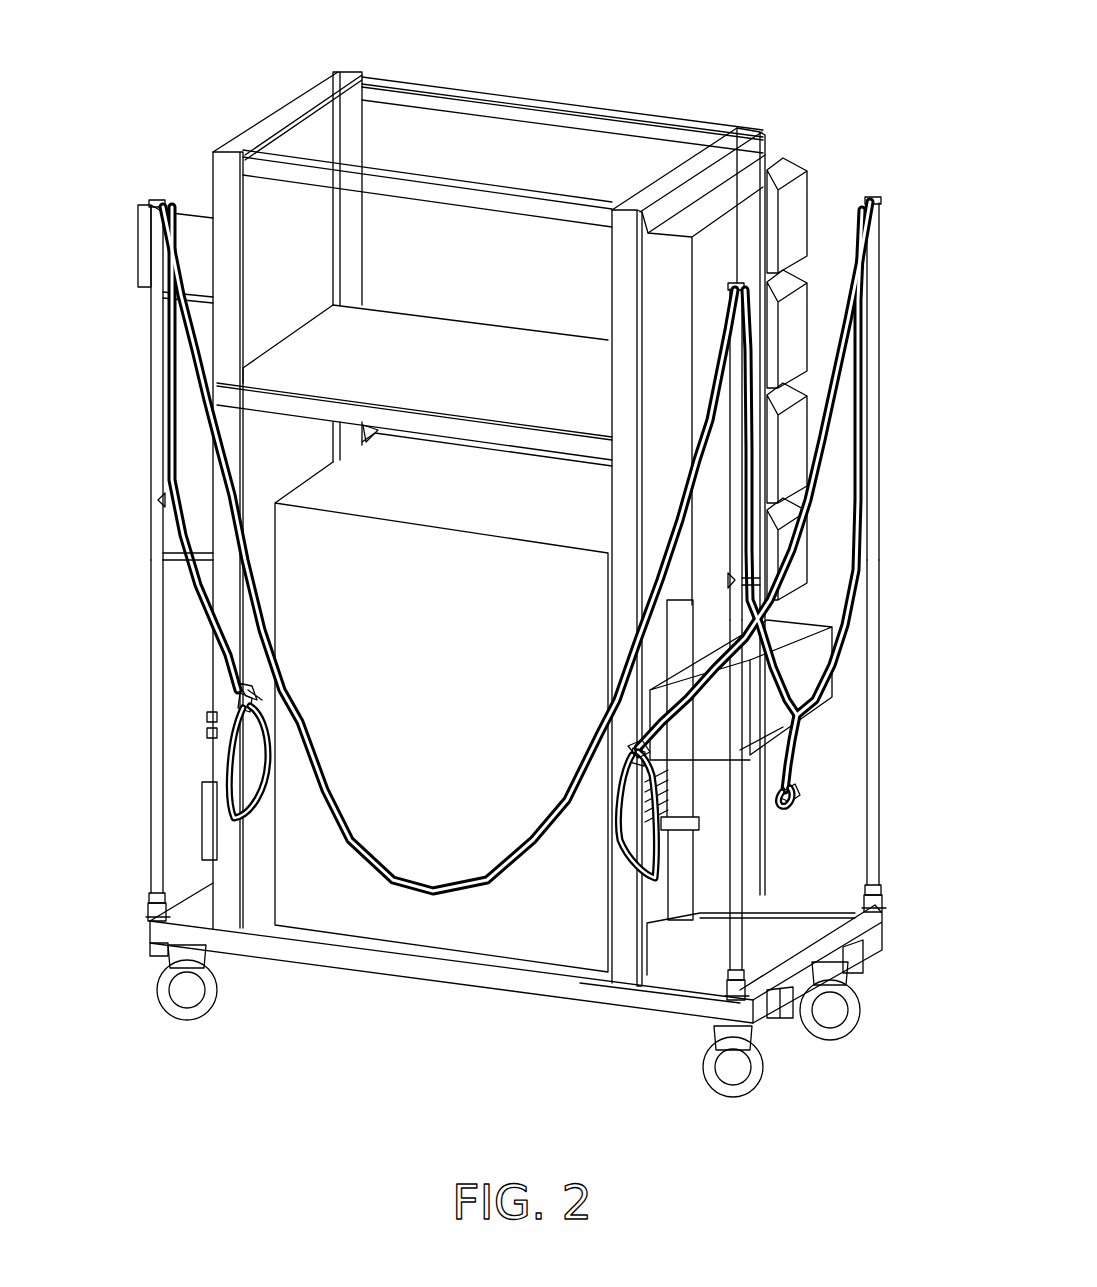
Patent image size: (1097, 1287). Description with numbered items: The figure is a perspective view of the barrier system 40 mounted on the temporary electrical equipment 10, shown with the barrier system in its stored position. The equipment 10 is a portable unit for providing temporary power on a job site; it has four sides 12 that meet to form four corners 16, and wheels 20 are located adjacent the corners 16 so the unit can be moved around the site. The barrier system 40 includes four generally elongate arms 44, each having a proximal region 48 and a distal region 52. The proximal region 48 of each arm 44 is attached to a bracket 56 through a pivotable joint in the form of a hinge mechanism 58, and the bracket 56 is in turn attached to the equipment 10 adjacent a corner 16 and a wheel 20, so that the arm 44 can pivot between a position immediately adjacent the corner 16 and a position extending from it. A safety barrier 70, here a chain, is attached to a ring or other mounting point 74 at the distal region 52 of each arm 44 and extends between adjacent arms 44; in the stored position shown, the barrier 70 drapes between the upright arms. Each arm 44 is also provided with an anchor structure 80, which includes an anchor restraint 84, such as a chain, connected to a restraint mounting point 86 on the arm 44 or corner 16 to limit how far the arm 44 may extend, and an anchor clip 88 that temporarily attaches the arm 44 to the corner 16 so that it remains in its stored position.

The temporary electrical equipment 10 is at (455, 332).
The sides 12 is at (292, 118).
The corners 16 is at (345, 72).
The wheels 20 is at (190, 1000).
The barrier system 40 is at (436, 1027).
The arms 44 is at (151, 812).
The proximal region 48 is at (152, 895).
The distal region 52 is at (150, 398).
The bracket 56 is at (165, 935).
The hinge mechanism 58 is at (150, 915).
The safety barrier 70 is at (838, 268).
The mounting point 74 is at (868, 197).
The anchor structure 80 is at (228, 737).
The anchor restraint 84 is at (228, 765).
The restraint mounting point 86 is at (160, 500).
The anchor clip 88 is at (232, 685).